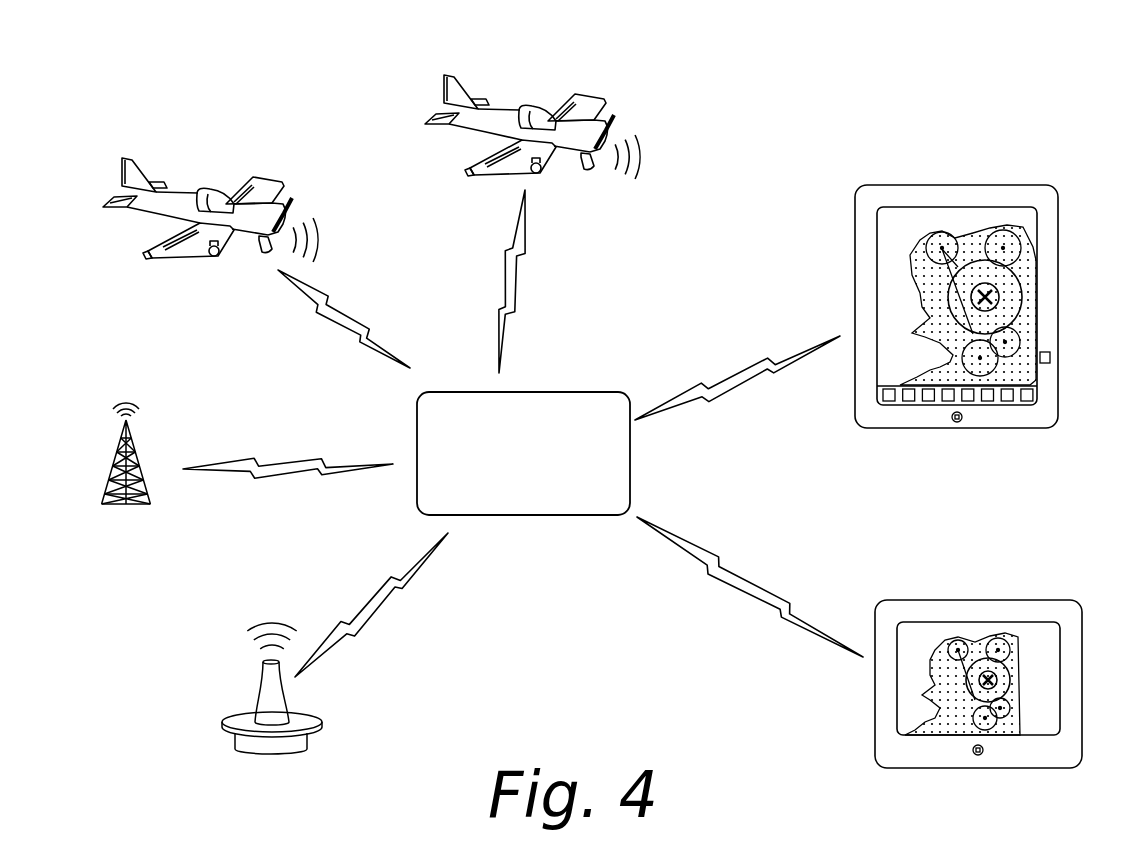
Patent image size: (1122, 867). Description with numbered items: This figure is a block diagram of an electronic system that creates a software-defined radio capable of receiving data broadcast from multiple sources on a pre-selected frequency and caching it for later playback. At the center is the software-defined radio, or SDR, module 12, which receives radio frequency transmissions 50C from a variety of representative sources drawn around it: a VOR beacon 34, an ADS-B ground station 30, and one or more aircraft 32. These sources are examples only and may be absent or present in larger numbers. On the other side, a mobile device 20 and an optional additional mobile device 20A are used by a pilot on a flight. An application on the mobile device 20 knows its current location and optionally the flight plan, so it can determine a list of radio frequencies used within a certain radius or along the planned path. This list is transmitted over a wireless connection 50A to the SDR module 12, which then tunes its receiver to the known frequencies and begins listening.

The software-defined radio (SDR) module 12 is at (586, 402).
The mobile device 20 is at (933, 195).
The additional mobile device 20A is at (945, 610).
The ADS-B ground station 30 is at (140, 430).
The aircraft 32 is at (272, 212).
The VOR beacon 34 is at (267, 702).
The wireless connection 50A is at (750, 375).
The radio frequency transmissions 50C is at (364, 329).